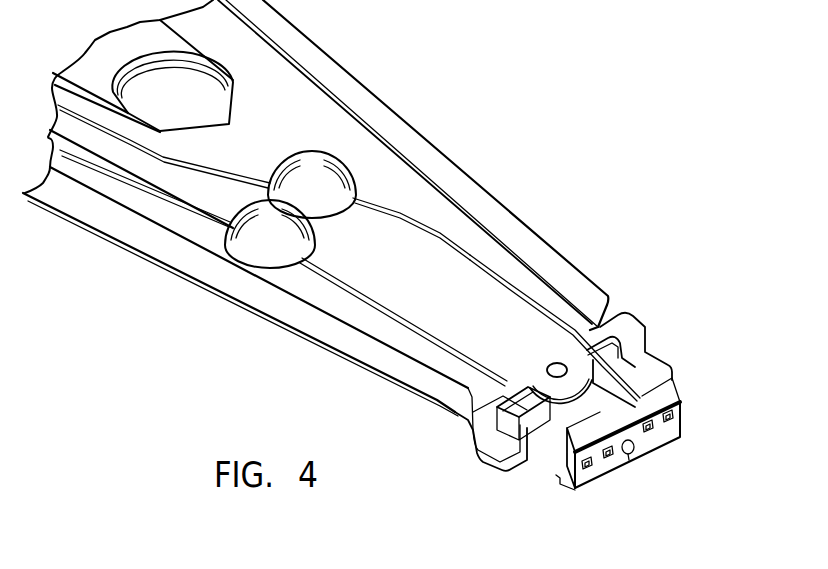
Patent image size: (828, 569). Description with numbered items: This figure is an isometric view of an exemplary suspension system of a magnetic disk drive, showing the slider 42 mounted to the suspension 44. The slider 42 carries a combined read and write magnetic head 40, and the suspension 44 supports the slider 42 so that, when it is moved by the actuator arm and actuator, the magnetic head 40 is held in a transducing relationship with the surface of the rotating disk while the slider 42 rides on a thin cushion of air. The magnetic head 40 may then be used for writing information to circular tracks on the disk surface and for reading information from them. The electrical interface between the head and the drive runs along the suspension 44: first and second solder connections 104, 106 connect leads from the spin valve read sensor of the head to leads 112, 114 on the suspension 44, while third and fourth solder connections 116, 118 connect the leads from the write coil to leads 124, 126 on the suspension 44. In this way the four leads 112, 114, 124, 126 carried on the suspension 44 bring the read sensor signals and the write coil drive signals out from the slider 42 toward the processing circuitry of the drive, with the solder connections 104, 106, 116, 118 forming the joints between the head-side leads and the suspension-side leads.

The magnetic head 40 is at (638, 465).
The slider 42 is at (533, 476).
The suspension 44 is at (462, 160).
The first solder connection 104 is at (575, 487).
The second solder connection 106 is at (678, 412).
The lead 112 is at (348, 288).
The lead 114 is at (510, 284).
The third solder connection 116 is at (606, 458).
The fourth solder connection 118 is at (657, 426).
The lead 124 is at (357, 288).
The lead 126 is at (438, 234).